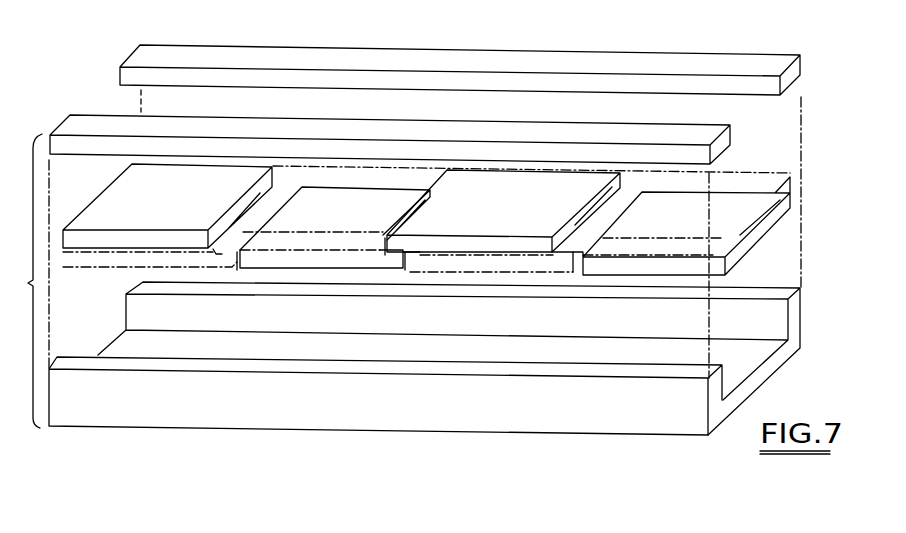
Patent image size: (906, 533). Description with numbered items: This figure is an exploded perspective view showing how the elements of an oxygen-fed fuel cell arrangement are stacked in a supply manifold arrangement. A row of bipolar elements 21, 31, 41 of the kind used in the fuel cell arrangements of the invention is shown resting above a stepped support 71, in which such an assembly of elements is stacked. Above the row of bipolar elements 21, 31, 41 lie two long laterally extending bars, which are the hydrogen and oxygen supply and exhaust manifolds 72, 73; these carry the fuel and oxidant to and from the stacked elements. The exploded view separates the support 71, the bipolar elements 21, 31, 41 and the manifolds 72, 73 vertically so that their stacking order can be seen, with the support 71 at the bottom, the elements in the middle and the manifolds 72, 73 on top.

The bipolar element 21 is at (240, 165).
The bipolar element 31 is at (297, 177).
The bipolar element 41 is at (355, 207).
The support 71 is at (65, 400).
The hydrogen supply and exhaust manifold 72 is at (68, 117).
The oxygen supply and exhaust manifold 73 is at (120, 68).